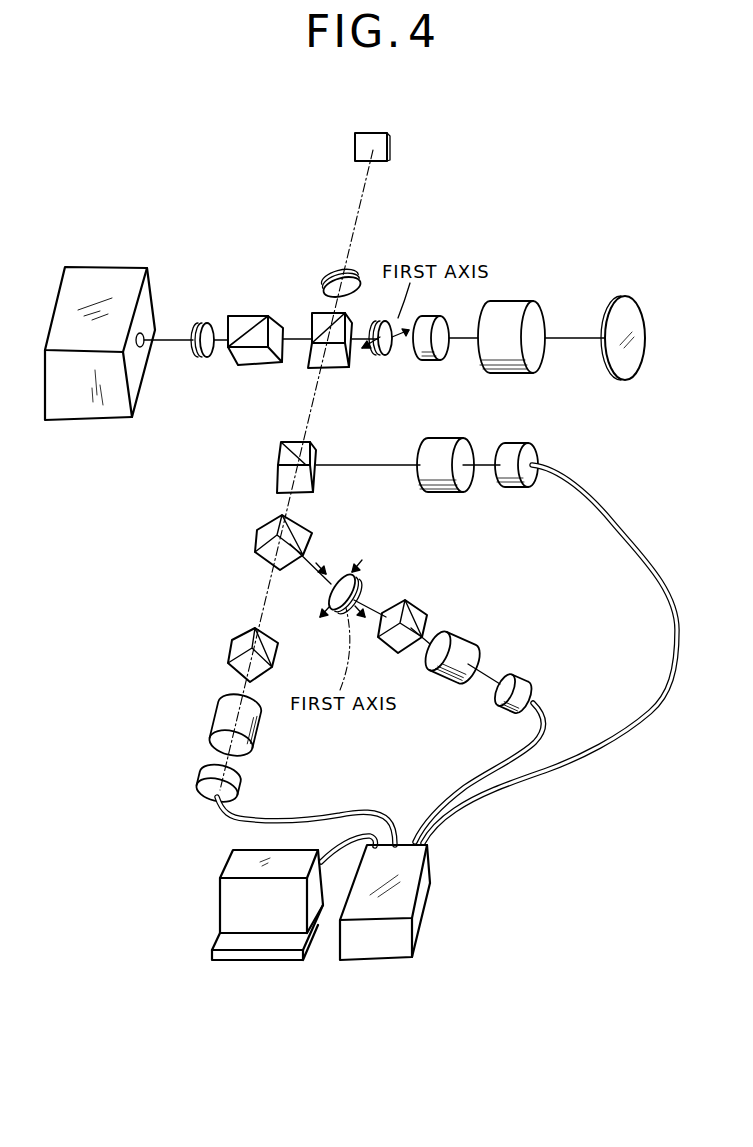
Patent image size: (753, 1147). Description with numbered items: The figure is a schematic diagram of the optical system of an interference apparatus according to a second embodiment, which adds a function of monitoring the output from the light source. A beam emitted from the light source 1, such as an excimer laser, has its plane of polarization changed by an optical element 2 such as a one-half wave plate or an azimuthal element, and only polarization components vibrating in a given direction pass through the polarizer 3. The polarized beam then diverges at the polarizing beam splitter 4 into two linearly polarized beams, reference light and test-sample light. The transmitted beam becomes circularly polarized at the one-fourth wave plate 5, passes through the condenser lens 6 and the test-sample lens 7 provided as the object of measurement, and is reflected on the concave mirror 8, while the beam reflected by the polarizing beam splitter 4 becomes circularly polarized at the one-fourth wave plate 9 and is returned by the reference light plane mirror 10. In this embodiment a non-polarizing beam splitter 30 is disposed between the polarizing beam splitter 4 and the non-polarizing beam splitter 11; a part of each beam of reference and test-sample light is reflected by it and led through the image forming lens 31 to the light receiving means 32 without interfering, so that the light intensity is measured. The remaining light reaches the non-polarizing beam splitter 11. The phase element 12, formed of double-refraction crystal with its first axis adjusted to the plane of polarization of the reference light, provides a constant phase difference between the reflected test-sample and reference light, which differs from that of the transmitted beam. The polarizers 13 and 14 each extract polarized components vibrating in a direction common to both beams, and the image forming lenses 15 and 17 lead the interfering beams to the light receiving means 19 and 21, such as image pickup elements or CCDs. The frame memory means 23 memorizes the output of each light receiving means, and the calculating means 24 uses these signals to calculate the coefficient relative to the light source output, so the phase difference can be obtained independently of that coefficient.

The light source 1 is at (80, 422).
The optical element 2 is at (197, 357).
The polarizer 3 is at (247, 367).
The polarizing beam splitter 4 is at (335, 370).
The one-fourth wave plate 5 is at (388, 350).
The condenser lens 6 is at (435, 360).
The test-sample lens 7 is at (507, 375).
The concave mirror 8 is at (620, 377).
The one-fourth wave plate 9 is at (353, 273).
The reference light plane mirror 10 is at (392, 145).
The non-polarizing beam splitter 11 is at (303, 532).
The phase element 12 is at (360, 575).
The polarizer 13 is at (278, 655).
The polarizer 14 is at (425, 607).
The image forming lens 15 is at (258, 733).
The image forming lens 17 is at (478, 643).
The light receiving means 19 is at (243, 785).
The light receiving means 21 is at (530, 673).
The frame memory means 23 is at (423, 923).
The calculating means 24 is at (218, 896).
The non-polarizing beam splitter 30 is at (277, 478).
The image forming lens 31 is at (448, 493).
The light receiving means 32 is at (520, 443).